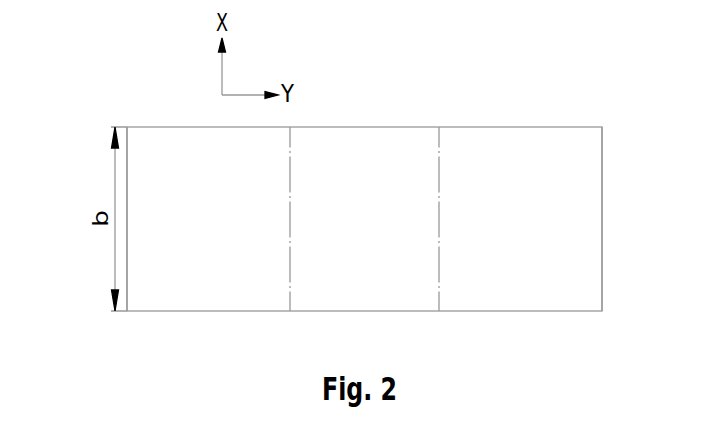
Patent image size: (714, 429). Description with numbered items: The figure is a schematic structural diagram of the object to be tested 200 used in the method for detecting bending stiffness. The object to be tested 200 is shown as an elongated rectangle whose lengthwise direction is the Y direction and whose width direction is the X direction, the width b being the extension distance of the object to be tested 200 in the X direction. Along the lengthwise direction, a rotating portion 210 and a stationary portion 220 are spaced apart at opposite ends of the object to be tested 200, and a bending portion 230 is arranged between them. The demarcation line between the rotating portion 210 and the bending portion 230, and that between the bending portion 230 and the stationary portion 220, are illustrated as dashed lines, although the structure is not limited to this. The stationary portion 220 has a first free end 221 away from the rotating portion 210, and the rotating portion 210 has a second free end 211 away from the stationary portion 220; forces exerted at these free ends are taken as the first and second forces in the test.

The object to be tested 200 is at (394, 49).
The rotating portion 210 is at (195, 291).
The second free end 211 is at (127, 273).
The stationary portion 220 is at (513, 293).
The first free end 221 is at (602, 224).
The bending portion 230 is at (390, 302).